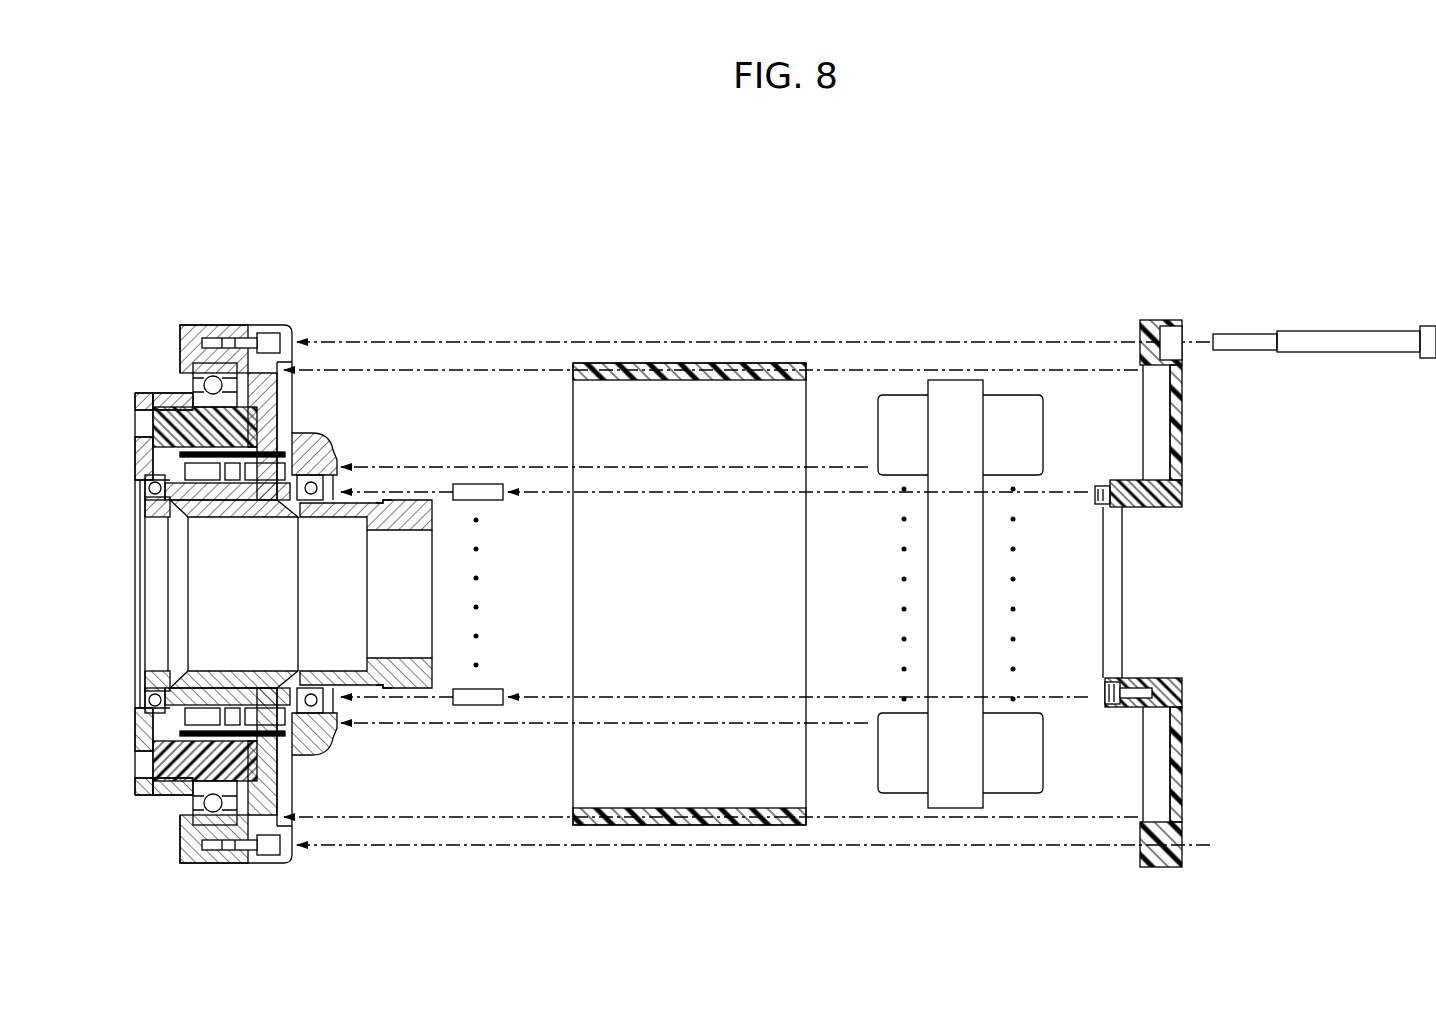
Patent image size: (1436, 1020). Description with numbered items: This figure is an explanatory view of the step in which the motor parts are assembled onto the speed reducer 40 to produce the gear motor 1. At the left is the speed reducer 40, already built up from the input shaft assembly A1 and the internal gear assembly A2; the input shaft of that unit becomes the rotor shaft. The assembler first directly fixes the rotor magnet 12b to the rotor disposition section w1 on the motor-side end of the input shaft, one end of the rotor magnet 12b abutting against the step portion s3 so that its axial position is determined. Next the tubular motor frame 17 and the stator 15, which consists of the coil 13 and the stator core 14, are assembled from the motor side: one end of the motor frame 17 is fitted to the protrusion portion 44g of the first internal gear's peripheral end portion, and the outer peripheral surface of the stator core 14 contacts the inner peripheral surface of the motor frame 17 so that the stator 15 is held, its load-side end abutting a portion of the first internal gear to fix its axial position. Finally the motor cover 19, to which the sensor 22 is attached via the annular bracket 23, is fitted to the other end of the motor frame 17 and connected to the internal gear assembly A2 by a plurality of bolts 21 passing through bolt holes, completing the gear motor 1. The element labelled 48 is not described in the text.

The gear motor 1 is at (875, 229).
The speed reducer 40 is at (307, 282).
The housing 48 is at (135, 393).
The internal gear assembly A2 is at (250, 323).
The protrusion portion 44g is at (292, 365).
The input shaft assembly A1 is at (162, 609).
The step portion s3 is at (368, 510).
The rotor disposition section w1 is at (404, 499).
The rotor magnet 12b is at (485, 498).
The motor frame 17 is at (708, 361).
The stator 15 is at (979, 365).
The stator core 14 is at (970, 756).
The coil 13 is at (1027, 740).
The motor cover 19 is at (1159, 307).
The bolt 21 is at (1334, 332).
The sensor 22 is at (1107, 492).
The bracket 23 is at (1116, 580).